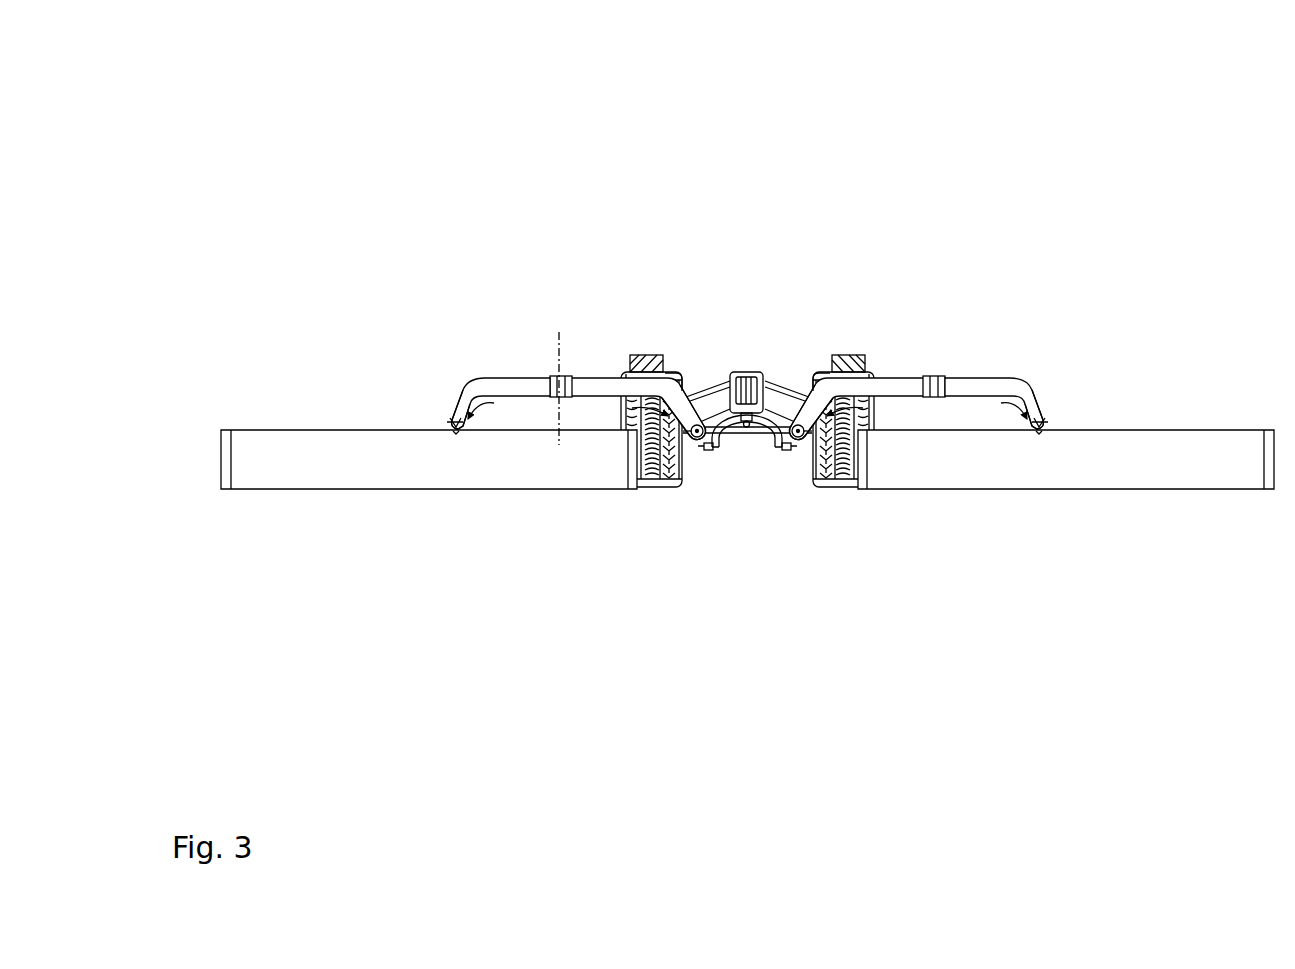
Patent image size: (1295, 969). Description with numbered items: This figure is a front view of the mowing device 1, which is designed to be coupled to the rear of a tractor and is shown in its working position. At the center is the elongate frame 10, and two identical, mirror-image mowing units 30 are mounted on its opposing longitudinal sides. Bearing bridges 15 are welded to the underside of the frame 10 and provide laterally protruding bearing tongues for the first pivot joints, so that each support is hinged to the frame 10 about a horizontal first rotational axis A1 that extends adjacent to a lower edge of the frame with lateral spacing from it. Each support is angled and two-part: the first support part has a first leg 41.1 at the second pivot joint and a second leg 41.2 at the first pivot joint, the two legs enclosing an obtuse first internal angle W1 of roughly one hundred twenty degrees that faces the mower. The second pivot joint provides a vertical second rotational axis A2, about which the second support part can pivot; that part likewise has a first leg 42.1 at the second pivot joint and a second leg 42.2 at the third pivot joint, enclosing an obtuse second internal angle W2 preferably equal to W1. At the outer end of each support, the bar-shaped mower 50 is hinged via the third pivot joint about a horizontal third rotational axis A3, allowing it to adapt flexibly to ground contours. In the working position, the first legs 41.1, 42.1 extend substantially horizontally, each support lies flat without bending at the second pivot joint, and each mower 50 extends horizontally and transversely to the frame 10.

The mowing device 1 is at (1002, 131).
The frame 10 is at (752, 372).
The bearing bridge 15 is at (715, 402).
The mowing unit 30 is at (413, 222).
The first leg of the first support part 41.1 is at (602, 387).
The second leg of the first support part 41.2 is at (673, 397).
The first leg of the second support part 42.1 is at (525, 384).
The second leg of the second support part 42.2 is at (465, 403).
The bar-shaped mower 50 is at (273, 506).
The first rotational axis A1 is at (700, 440).
The second rotational axis A2 is at (557, 352).
The third rotational axis A3 is at (451, 421).
The first internal angle W1 is at (638, 398).
The second internal angle W2 is at (497, 404).